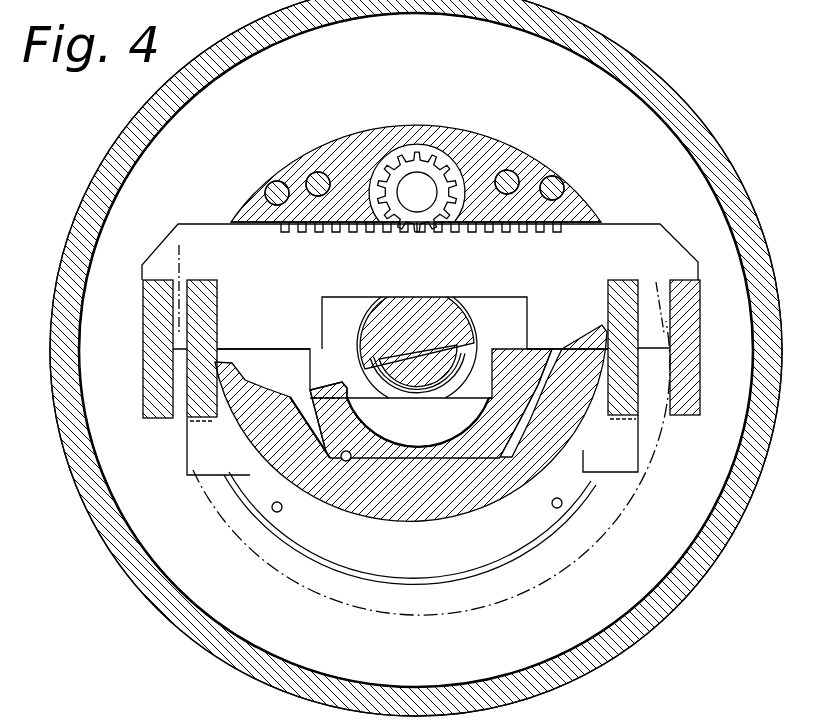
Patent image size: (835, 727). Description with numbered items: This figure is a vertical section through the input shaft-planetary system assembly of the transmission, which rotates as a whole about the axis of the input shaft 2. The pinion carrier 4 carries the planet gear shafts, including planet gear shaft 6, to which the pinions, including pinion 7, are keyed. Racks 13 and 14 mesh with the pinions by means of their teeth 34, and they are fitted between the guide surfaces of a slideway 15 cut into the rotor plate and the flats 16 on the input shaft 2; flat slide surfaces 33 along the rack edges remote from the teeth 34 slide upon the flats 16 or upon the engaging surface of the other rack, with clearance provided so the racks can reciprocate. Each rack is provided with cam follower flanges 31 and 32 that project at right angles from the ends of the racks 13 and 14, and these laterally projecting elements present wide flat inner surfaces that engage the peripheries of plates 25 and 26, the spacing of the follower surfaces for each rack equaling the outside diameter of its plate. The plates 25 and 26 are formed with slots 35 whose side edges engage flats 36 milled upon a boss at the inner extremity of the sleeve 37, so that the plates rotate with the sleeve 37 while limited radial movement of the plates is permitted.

The input shaft 2 is at (458, 340).
The pinion carrier 4 is at (487, 140).
The planet gear shaft 6 is at (410, 182).
The pinion 7 is at (422, 147).
The rack 13 is at (608, 229).
The rack 14 is at (290, 368).
The slideway 15 is at (272, 227).
The flats 16 is at (418, 297).
The plate 25 is at (658, 441).
The plate 26 is at (260, 413).
The cam follower flange 31 is at (148, 310).
The cam follower flange 32 is at (212, 277).
The flat slide surfaces 33 is at (265, 350).
The teeth 34 is at (460, 226).
The slots 35 is at (353, 455).
The flats 36 is at (428, 452).
The sleeve 37 is at (358, 411).